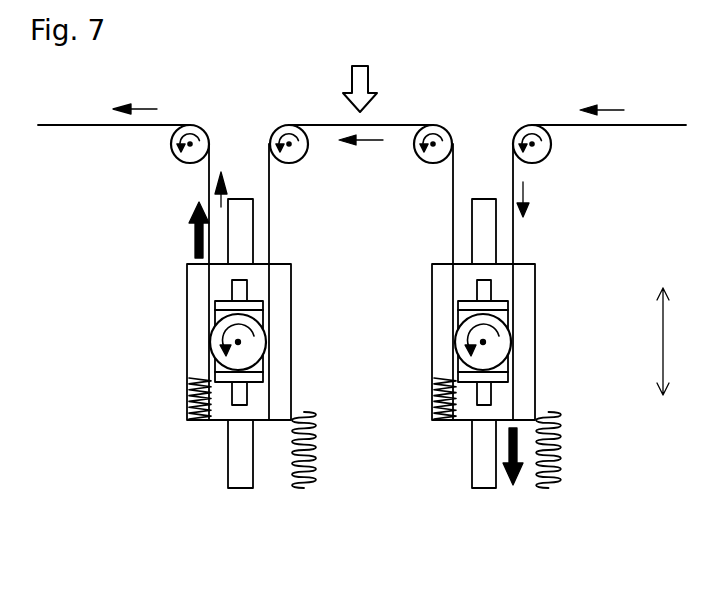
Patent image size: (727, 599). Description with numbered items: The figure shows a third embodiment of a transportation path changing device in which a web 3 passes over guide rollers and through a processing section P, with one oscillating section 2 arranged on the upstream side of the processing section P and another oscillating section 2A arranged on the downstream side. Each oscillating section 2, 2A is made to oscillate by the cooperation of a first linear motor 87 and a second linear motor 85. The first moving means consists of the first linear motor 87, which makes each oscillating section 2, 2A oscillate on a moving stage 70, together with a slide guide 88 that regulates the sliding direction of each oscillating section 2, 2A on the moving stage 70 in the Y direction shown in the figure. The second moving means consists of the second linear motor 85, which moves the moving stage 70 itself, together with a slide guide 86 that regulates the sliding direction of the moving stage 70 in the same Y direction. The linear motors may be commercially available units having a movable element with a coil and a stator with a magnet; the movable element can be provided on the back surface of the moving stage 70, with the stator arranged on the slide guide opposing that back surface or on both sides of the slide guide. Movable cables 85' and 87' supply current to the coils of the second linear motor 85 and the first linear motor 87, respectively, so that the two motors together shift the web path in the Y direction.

The web 3 is at (650, 125).
The processing section P is at (362, 78).
The Y direction Y is at (672, 341).
The moving stage 70 is at (197, 362).
The second linear motor 85 is at (412, 329).
The slide guide 86 is at (235, 462).
The slide guide 88 is at (238, 291).
The first linear motor 87 is at (422, 336).
The oscillating section 2A is at (258, 366).
The oscillating section 2 is at (508, 370).
The movable cable 87' is at (267, 407).
The movable cable 85' is at (465, 479).